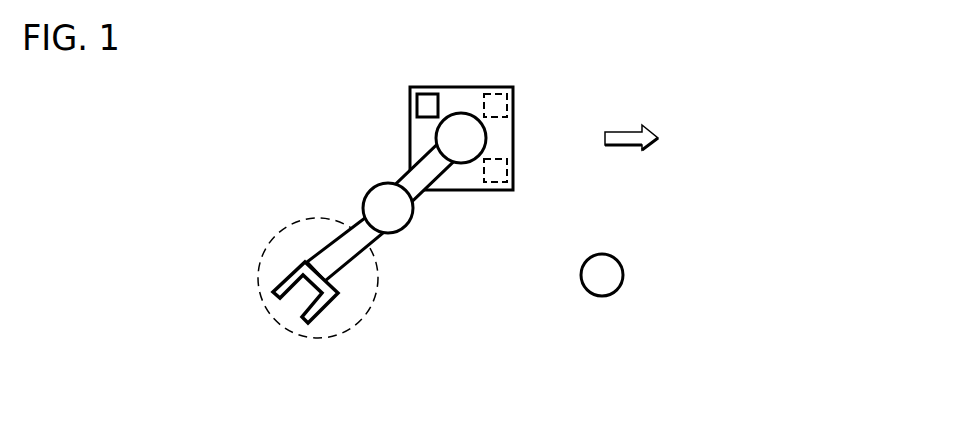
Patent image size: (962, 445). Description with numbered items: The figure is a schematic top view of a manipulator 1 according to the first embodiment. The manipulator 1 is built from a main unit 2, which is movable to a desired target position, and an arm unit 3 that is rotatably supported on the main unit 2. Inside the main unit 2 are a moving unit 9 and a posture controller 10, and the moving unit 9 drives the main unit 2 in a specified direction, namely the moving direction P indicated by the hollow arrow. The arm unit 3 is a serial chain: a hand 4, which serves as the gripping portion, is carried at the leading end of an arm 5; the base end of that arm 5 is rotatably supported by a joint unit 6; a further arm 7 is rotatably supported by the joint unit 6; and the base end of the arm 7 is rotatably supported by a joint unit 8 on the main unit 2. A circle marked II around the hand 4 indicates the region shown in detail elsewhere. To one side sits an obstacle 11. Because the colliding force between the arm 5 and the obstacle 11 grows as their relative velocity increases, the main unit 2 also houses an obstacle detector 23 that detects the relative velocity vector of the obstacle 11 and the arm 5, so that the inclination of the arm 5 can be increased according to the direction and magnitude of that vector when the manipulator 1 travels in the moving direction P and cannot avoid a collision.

The manipulator 1 is at (393, 110).
The main unit 2 is at (452, 87).
The arm unit 3 is at (420, 279).
The hand 4 is at (331, 331).
The arm 5 is at (343, 260).
The joint unit 6 is at (392, 215).
The arm 7 is at (425, 175).
The joint unit 8 is at (463, 152).
The moving unit 9 is at (512, 168).
The posture controller 10 is at (512, 104).
The obstacle 11 is at (622, 267).
The obstacle detector 23 is at (425, 92).
The detail region of FIG. 2 II is at (273, 322).
The moving direction P is at (641, 137).